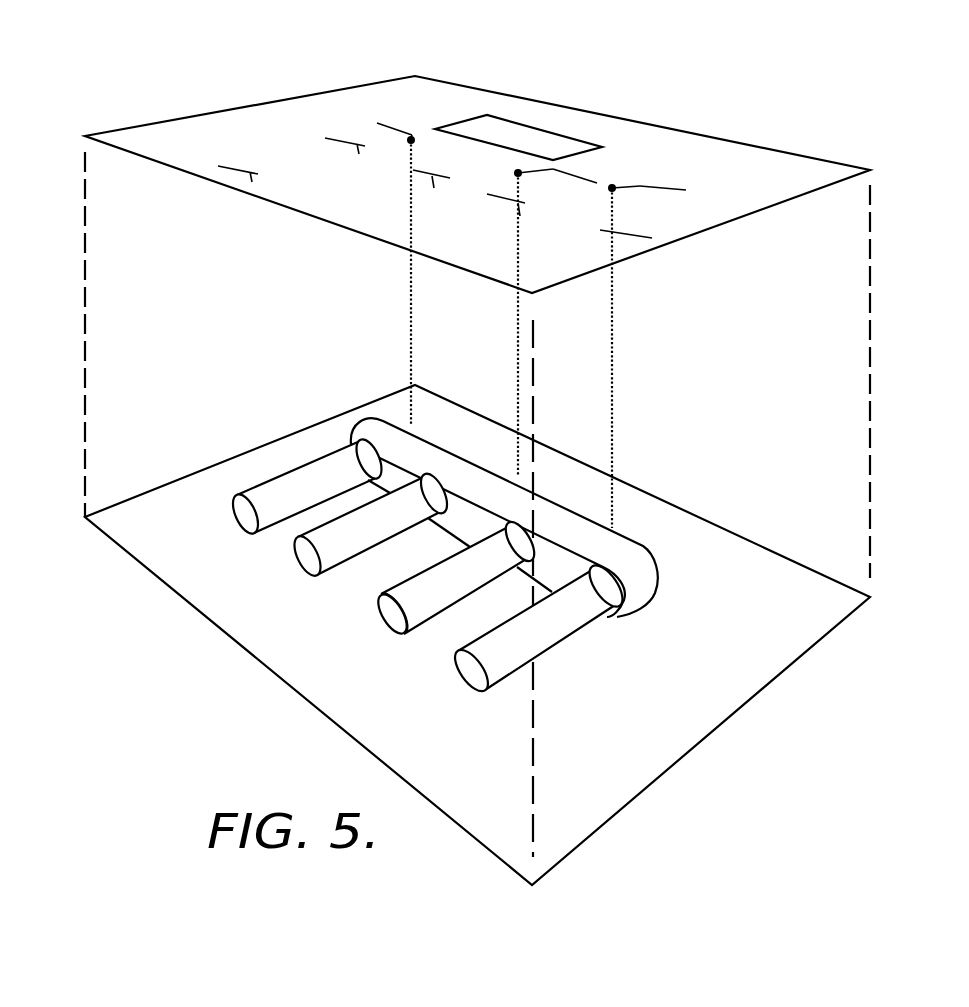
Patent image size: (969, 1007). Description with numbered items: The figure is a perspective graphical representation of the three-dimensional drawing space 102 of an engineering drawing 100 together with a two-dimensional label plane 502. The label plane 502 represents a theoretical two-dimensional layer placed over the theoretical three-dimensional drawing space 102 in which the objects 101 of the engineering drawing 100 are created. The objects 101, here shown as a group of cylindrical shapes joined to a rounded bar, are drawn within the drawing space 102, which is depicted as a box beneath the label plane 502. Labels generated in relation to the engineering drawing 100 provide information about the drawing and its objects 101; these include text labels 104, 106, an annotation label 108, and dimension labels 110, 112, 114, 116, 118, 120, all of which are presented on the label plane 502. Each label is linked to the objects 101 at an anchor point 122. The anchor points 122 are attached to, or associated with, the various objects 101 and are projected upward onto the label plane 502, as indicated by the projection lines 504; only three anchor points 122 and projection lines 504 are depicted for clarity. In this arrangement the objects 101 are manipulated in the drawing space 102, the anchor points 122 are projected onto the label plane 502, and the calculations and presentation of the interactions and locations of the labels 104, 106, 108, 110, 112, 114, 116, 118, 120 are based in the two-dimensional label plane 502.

The engineering drawing 100 is at (97, 72).
The label plane 502 is at (345, 89).
The drawing space 102 is at (62, 352).
The objects 101 is at (659, 590).
The text label 104 is at (397, 122).
The text label 106 is at (600, 165).
The annotation label 108 is at (498, 121).
The dimension label 110 is at (662, 177).
The dimension label 112 is at (650, 221).
The dimension label 114 is at (486, 192).
The dimension label 116 is at (440, 164).
The dimension label 118 is at (340, 126).
The dimension label 120 is at (233, 152).
The anchor point 122 is at (409, 140).
The projection lines 504 is at (409, 281).